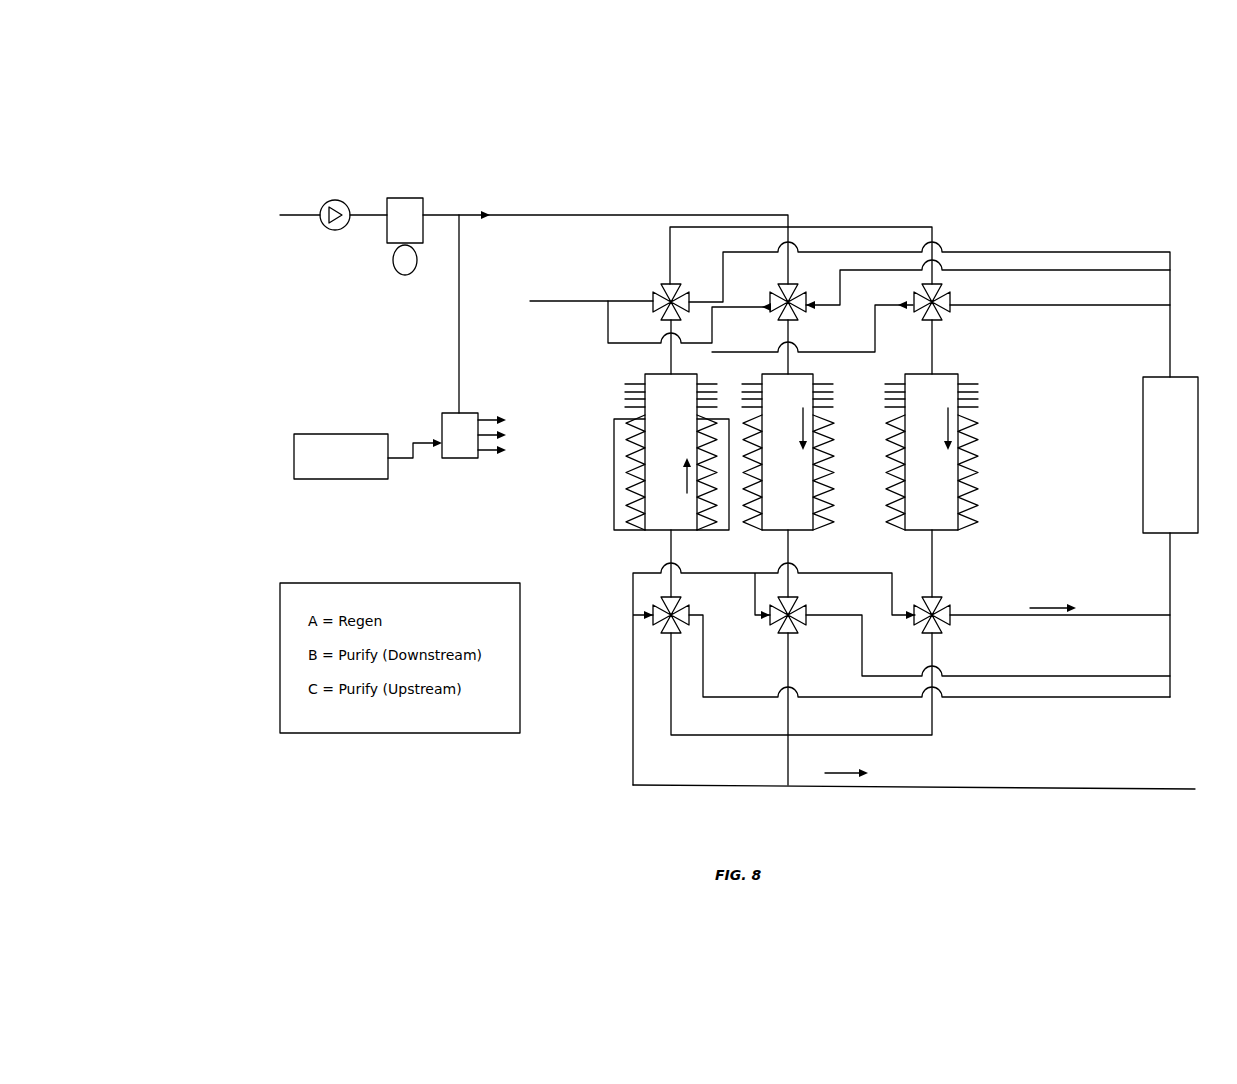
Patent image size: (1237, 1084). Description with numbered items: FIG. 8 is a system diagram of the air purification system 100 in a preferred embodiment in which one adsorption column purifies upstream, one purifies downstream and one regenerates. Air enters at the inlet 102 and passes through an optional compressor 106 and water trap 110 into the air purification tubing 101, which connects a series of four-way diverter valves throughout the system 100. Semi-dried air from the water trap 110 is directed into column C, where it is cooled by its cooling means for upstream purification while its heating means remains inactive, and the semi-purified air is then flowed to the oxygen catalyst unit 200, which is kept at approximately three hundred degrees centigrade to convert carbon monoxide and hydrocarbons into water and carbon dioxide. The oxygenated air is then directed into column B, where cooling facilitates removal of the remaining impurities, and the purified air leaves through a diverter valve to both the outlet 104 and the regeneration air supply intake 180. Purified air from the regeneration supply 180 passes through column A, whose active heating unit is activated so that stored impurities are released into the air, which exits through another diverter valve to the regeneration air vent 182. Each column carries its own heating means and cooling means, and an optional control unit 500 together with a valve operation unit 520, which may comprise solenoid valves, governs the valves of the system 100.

The air purification system 100 is at (248, 150).
The air purification tubing 101 is at (572, 214).
The inlet 102 is at (288, 214).
The outlet 104 is at (1179, 790).
The compressor 106 is at (346, 198).
The water trap 110 is at (412, 198).
The regeneration air supply intake 180 is at (762, 787).
The regeneration air vent 182 is at (583, 301).
The oxygen catalyst unit 200 is at (1143, 418).
The control unit 500 is at (294, 450).
The valve operation unit 520 is at (442, 423).